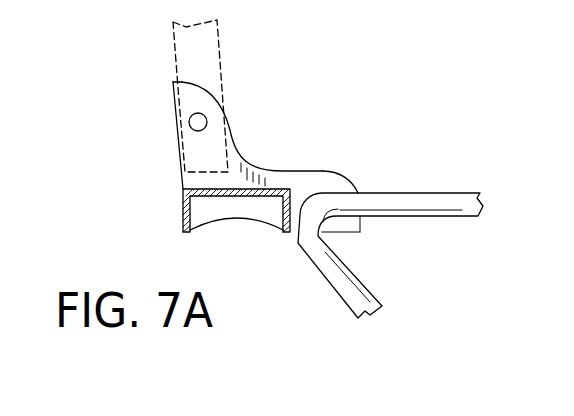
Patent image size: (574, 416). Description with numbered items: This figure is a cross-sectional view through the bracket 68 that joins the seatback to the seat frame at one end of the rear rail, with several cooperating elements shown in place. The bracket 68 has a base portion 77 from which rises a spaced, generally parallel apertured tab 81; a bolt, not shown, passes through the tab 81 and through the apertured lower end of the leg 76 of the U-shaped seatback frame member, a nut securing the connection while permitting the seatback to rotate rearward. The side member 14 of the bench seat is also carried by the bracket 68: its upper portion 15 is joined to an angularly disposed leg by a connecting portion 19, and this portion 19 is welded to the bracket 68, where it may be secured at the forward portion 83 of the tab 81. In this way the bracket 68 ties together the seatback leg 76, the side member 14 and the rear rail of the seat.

The side member 14 is at (405, 210).
The upper portion of side member 15 is at (420, 208).
The connecting portion 19 is at (302, 226).
The bracket 68 is at (241, 122).
The leg of seatback frame member 76 is at (228, 58).
The base portion 77 is at (244, 198).
The apertured tab 81 is at (243, 157).
The forward portion of tab 83 is at (332, 183).